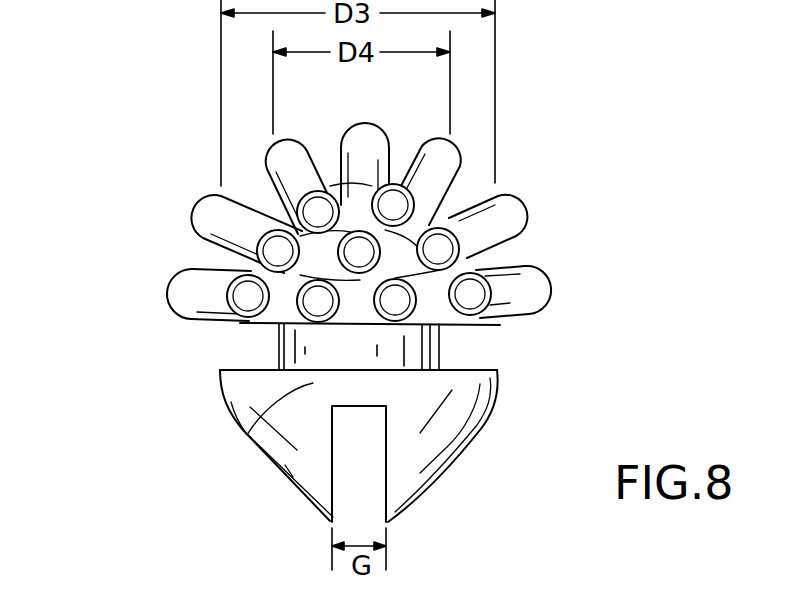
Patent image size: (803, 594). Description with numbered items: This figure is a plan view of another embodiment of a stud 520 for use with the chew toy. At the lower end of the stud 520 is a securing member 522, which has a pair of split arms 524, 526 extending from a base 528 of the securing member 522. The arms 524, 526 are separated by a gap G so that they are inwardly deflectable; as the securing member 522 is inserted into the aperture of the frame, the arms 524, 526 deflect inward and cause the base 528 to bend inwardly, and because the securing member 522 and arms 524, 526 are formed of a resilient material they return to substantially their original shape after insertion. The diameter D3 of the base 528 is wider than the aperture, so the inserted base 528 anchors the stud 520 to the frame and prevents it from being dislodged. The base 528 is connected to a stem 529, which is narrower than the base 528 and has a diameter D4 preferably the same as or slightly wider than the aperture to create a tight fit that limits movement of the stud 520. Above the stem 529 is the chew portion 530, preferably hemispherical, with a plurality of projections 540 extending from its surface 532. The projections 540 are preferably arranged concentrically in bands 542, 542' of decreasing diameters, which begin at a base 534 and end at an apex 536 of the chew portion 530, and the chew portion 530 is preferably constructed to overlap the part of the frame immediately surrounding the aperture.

The stud 520 is at (172, 239).
The securing member 522 is at (495, 395).
The split arm 524 is at (420, 447).
The split arm 526 is at (297, 450).
The base 528 is at (245, 431).
The stem 529 is at (440, 348).
The chew portion 530 is at (457, 198).
The surface 532 is at (478, 262).
The base 534 is at (242, 322).
The apex 536 is at (342, 186).
The projection 540 is at (371, 124).
The band 542 is at (152, 294).
The band 542' is at (209, 211).